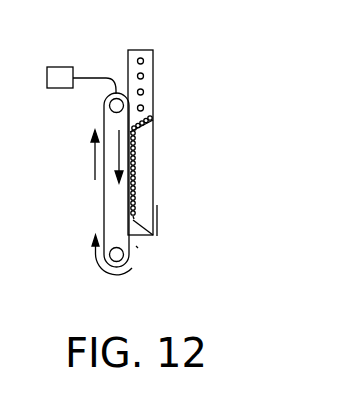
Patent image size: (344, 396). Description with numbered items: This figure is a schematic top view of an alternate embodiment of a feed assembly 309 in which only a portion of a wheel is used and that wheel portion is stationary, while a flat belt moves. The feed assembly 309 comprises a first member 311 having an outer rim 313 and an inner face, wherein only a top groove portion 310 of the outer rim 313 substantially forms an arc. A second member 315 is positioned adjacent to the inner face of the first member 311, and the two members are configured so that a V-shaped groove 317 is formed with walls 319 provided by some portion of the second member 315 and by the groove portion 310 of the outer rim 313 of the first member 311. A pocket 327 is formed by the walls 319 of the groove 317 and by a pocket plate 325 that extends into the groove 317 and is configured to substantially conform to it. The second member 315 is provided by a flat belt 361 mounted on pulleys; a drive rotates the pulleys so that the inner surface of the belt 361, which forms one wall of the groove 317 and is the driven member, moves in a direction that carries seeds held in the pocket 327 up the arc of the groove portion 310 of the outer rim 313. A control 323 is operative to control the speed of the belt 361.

The feed assembly 309 is at (209, 177).
The groove portion 310 is at (145, 166).
The first member 311 is at (153, 203).
The outer rim 313 is at (149, 232).
The second member 315 is at (138, 247).
The V-shaped groove 317 is at (137, 238).
The walls 319 is at (206, 260).
The control 323 is at (62, 66).
The pocket plate 325 is at (153, 80).
The pocket 327 is at (151, 116).
The flat belt 361 is at (103, 205).